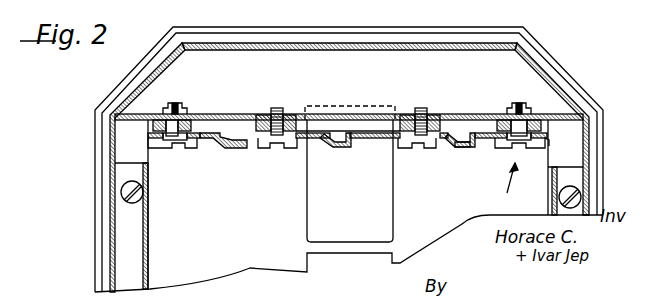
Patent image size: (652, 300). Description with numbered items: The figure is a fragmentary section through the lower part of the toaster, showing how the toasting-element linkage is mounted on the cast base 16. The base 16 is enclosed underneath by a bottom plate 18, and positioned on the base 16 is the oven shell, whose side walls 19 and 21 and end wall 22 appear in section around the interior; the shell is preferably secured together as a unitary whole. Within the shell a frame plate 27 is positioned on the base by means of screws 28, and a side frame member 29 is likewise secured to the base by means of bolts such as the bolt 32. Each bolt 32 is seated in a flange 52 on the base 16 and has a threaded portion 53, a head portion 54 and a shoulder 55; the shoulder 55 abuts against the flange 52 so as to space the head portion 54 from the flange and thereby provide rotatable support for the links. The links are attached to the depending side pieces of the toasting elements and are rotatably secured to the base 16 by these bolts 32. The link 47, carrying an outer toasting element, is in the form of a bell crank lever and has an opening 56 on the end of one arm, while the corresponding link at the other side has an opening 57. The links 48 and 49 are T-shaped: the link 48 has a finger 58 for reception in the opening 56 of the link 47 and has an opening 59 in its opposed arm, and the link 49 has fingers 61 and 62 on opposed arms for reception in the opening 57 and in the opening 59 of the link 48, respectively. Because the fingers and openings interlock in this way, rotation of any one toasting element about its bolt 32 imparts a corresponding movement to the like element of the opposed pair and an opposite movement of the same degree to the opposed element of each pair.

The base 16 is at (557, 69).
The bottom plate 18 is at (349, 199).
The side wall 19 is at (590, 155).
The side wall 21 is at (110, 142).
The end wall 22 is at (425, 47).
The frame plate 27 is at (152, 226).
The screw 28 is at (125, 200).
The side frame member 29 is at (203, 112).
The bolt 32 is at (502, 186).
The link 47 is at (477, 147).
The link 48 is at (401, 113).
The link 49 is at (302, 117).
The flange 52 is at (490, 113).
The threaded portion 53 is at (507, 110).
The head portion 54 is at (528, 148).
The shoulder 55 is at (487, 142).
The opening 56 is at (472, 147).
The opening 57 is at (217, 137).
The finger 58 is at (462, 150).
The opening 59 is at (353, 138).
The finger 61 is at (343, 137).
The finger 62 is at (222, 133).